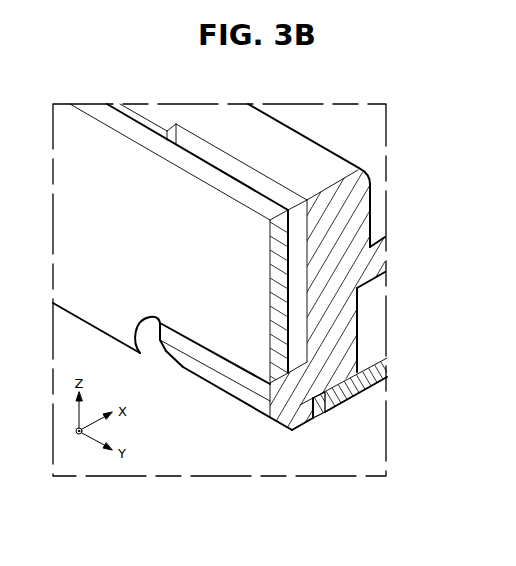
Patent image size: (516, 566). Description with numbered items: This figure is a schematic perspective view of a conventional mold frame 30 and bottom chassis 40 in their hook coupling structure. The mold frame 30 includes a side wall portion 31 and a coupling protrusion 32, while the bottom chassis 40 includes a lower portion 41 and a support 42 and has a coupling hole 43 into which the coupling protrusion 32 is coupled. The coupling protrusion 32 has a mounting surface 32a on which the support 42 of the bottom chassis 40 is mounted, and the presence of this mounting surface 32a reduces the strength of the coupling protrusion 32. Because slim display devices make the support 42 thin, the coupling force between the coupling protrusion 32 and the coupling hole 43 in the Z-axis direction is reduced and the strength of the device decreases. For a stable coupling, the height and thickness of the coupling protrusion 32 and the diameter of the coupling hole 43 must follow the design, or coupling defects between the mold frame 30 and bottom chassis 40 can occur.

The mold frame 30 is at (338, 270).
The side wall portion 31 is at (343, 338).
The coupling protrusion 32 is at (335, 394).
The mounting surface 32a is at (298, 362).
The bottom chassis 40 is at (197, 384).
The lower portion 41 is at (322, 451).
The support 42 is at (228, 318).
The coupling hole 43 is at (167, 355).